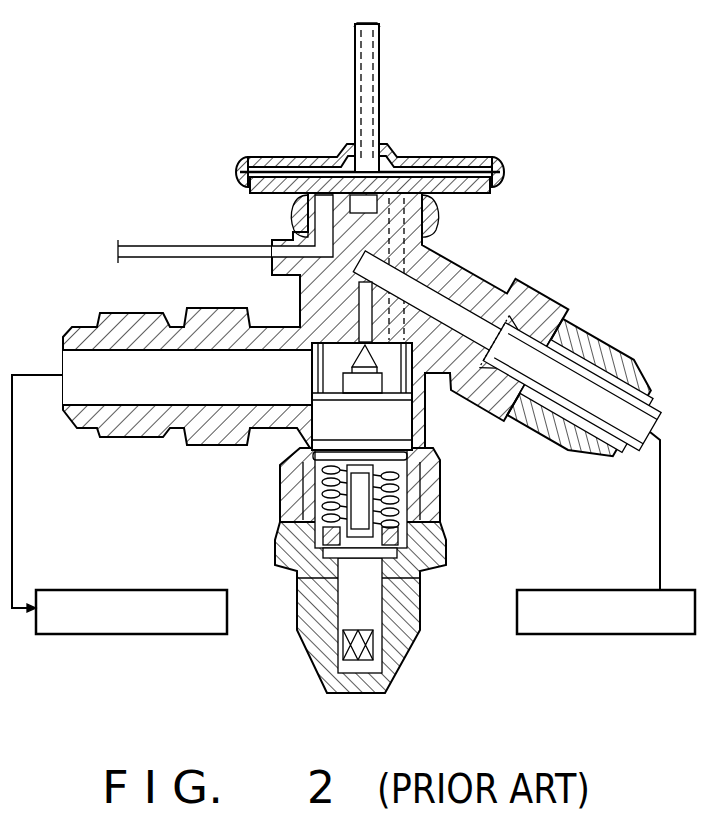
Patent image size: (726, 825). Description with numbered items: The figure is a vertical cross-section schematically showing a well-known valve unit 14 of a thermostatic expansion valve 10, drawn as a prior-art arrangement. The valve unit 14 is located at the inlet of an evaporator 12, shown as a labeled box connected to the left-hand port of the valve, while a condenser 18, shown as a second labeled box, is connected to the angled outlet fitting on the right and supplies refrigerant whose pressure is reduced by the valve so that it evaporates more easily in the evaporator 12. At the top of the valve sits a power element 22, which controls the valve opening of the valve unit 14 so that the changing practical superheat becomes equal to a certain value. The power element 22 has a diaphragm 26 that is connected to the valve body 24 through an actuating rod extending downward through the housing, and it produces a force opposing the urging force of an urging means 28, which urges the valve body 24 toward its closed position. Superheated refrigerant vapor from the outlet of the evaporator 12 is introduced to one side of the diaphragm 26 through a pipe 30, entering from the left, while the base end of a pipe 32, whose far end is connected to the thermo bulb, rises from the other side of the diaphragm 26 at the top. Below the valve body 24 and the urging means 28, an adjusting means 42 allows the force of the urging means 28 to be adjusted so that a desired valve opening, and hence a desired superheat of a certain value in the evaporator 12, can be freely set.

The thermostatic expansion valve 10 is at (245, 112).
The evaporator 12 is at (140, 634).
The valve unit 14 is at (278, 488).
The condenser 18 is at (605, 634).
The power element 22 is at (432, 150).
The valve body 24 is at (390, 427).
The diaphragm 26 is at (432, 203).
The urging means 28 is at (400, 498).
The pipe 30 is at (264, 250).
The pipe 32 is at (380, 73).
The adjusting means 42 is at (445, 555).